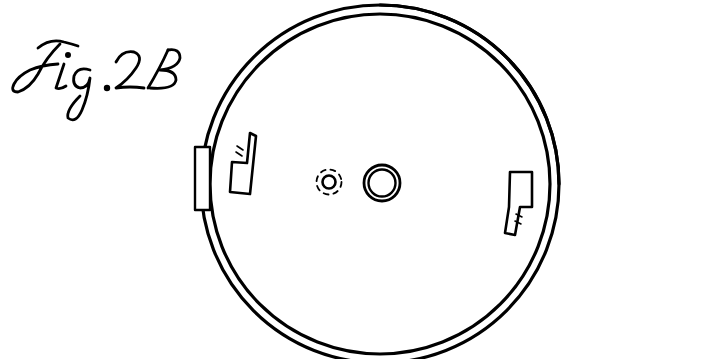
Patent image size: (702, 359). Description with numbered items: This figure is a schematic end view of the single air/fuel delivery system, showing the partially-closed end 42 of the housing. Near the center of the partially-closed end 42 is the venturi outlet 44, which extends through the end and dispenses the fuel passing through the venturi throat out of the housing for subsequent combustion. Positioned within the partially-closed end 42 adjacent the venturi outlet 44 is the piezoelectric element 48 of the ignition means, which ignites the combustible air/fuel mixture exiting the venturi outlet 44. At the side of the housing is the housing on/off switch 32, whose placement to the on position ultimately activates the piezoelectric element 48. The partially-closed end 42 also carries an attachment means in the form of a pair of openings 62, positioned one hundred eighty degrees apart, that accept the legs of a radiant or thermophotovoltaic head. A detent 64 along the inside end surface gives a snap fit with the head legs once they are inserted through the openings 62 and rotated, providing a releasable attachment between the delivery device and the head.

The partially-closed end 42 is at (470, 286).
The housing on/off switch 32 is at (195, 185).
The piezoelectric element 48 is at (331, 176).
The venturi outlet 44 is at (382, 183).
The openings 62 is at (236, 183).
The detent 64 is at (558, 206).